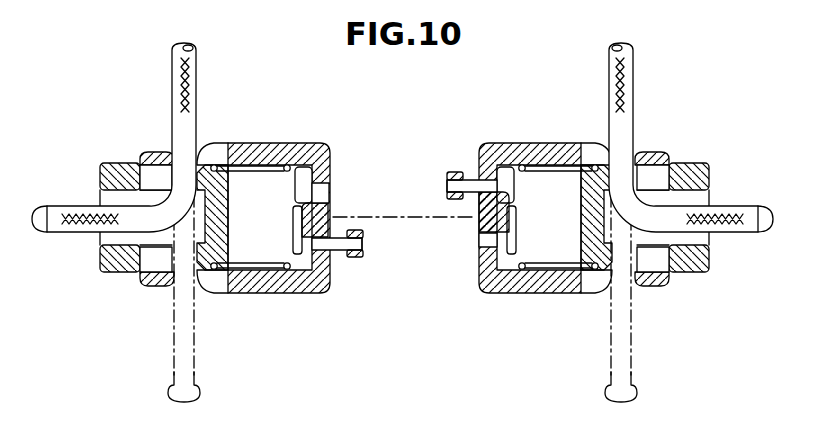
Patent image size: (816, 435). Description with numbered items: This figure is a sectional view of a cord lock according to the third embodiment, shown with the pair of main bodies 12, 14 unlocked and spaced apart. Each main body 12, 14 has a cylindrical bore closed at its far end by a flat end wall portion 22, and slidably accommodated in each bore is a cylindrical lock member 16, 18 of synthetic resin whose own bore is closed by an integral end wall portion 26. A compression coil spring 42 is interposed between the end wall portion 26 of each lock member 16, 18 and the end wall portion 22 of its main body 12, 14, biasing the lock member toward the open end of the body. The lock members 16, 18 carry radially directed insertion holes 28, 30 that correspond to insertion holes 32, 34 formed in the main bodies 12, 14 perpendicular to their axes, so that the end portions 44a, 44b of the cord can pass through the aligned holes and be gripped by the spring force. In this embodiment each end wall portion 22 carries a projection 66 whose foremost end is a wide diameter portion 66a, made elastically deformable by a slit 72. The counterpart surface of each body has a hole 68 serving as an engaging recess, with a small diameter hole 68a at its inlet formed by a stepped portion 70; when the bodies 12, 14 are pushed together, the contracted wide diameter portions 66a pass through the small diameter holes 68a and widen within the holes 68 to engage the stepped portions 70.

The main body 12 is at (283, 150).
The main body 14 is at (512, 150).
The lock member 16 is at (118, 163).
The lock member 18 is at (690, 162).
The end wall portion 22 is at (328, 207).
The end wall portion 26 is at (227, 220).
The insertion hole 28 is at (158, 172).
The insertion hole 30 is at (158, 262).
The insertion hole 32 is at (224, 156).
The insertion hole 34 is at (218, 292).
The compression coil spring 42 is at (247, 173).
The end portion of the cord 44a is at (197, 78).
The end portion of the cord 44b is at (635, 78).
The projection 66 is at (340, 251).
The wide diameter portion 66a is at (358, 238).
The hole 68 is at (309, 170).
The small diameter hole 68a is at (323, 190).
The stepped portion 70 is at (292, 216).
The slit 72 is at (360, 248).